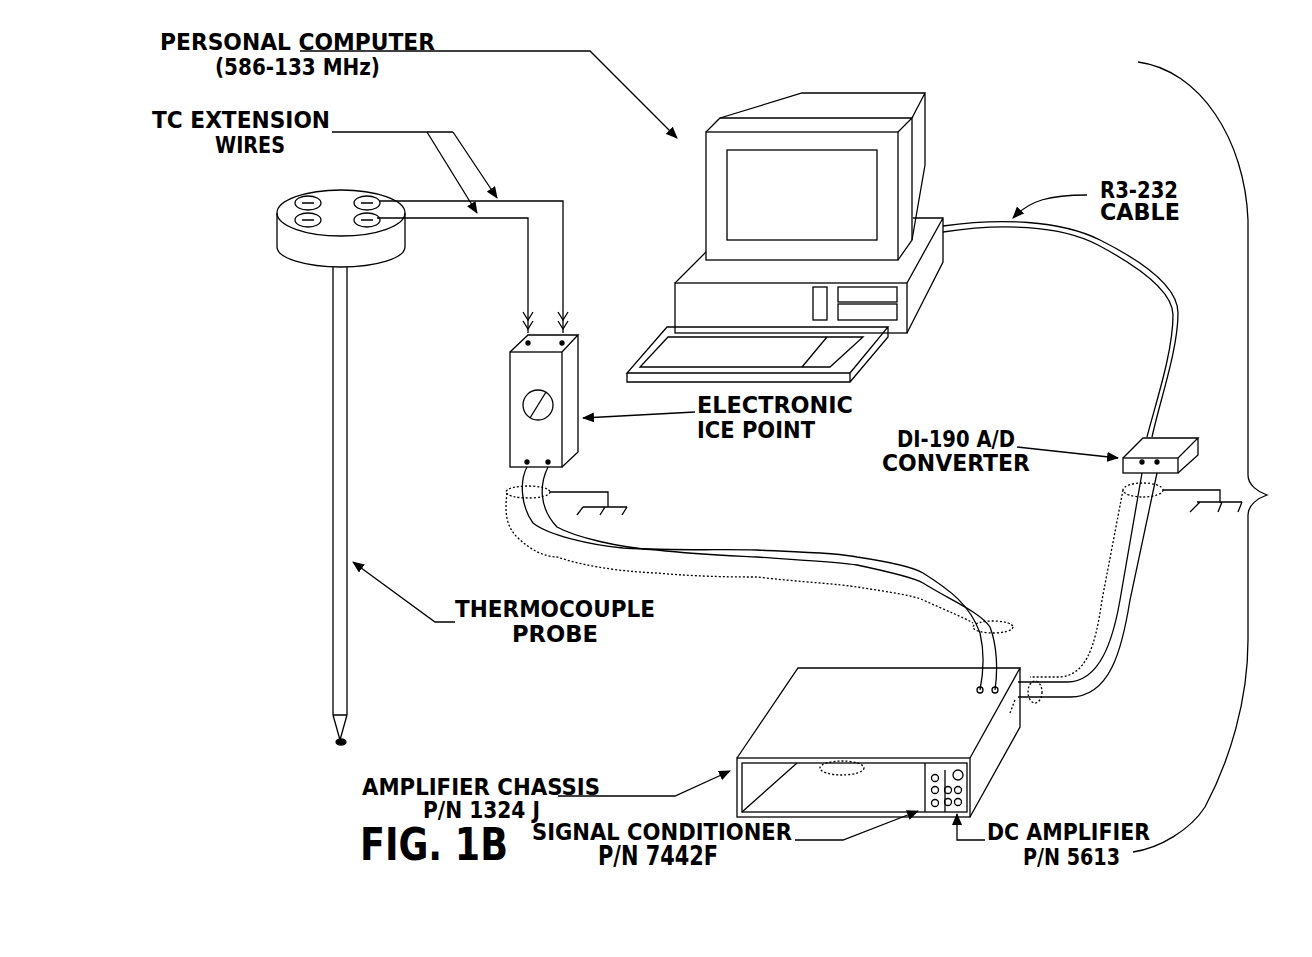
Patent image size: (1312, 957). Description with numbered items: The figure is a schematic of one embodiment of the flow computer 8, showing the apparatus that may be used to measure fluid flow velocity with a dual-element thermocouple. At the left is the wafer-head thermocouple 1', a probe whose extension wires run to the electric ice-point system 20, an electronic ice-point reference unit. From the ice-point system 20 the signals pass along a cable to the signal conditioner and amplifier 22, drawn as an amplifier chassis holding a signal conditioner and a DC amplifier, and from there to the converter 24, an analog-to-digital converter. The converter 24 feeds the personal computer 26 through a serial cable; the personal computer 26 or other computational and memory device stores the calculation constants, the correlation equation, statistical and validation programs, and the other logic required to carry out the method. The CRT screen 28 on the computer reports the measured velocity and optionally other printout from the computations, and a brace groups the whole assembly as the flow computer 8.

The wafer-head thermocouple 1' is at (322, 467).
The electric ice-point system 20 is at (583, 362).
The signal conditioner and amplifier 22 is at (1012, 753).
The converter 24 is at (1170, 415).
The personal computer 26 is at (841, 226).
The CRT screen 28 is at (833, 172).
The flow computer 8 is at (1213, 457).